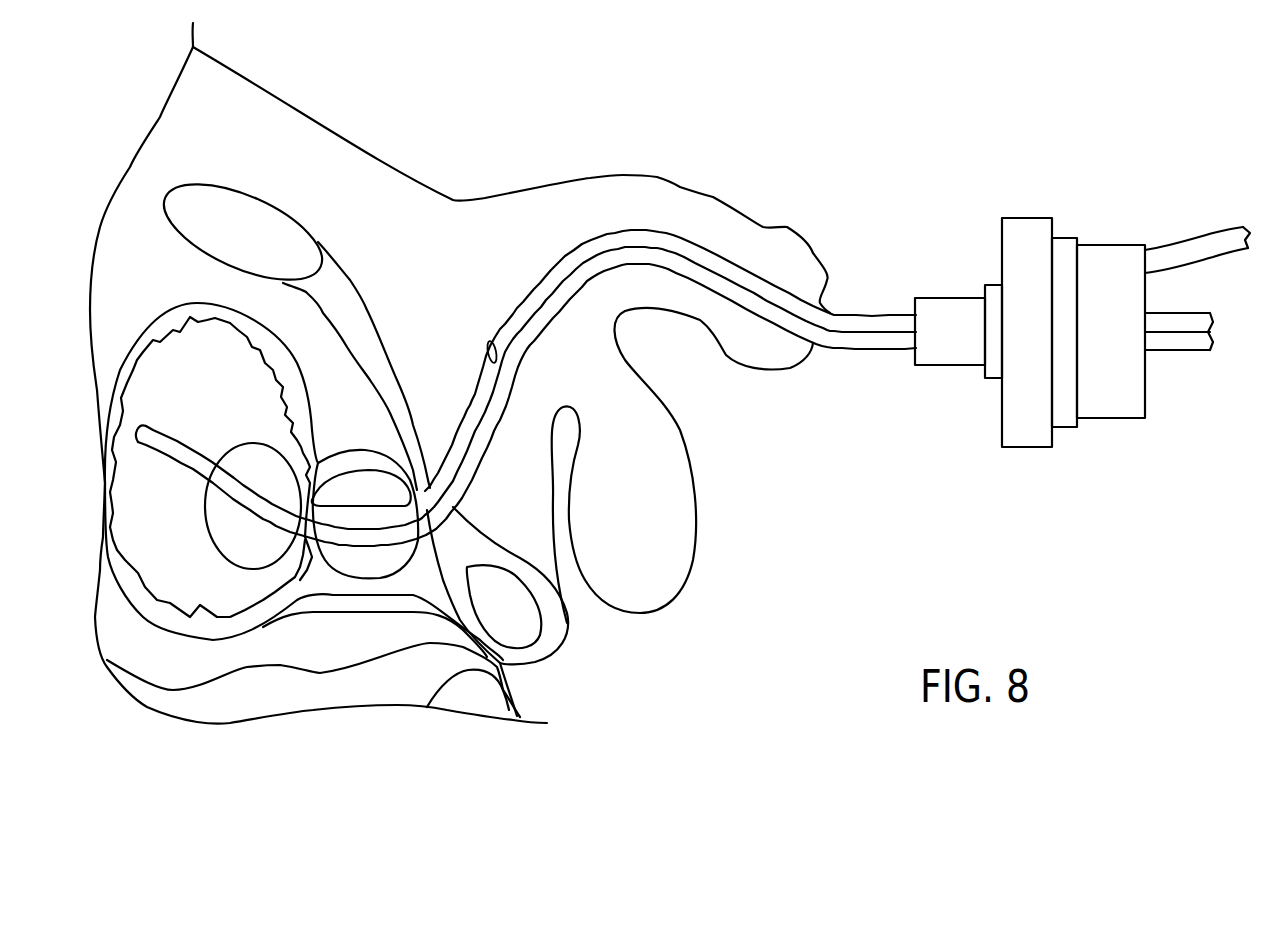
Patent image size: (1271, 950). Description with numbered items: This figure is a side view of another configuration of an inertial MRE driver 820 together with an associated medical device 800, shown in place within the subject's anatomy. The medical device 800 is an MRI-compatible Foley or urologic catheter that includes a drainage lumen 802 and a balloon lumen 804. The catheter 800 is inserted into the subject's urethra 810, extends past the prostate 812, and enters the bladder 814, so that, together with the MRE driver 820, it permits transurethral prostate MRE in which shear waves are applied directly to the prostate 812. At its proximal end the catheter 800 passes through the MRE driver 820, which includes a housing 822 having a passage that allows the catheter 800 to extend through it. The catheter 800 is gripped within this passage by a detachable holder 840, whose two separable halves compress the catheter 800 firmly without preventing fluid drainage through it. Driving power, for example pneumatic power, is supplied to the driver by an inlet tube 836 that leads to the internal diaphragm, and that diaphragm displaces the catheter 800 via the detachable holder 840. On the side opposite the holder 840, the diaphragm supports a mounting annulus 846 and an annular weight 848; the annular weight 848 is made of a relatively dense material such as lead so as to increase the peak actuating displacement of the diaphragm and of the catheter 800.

The medical device 800 is at (526, 382).
The drainage lumen 802 is at (540, 328).
The balloon lumen 804 is at (531, 277).
The urethra 810 is at (496, 341).
The prostate 812 is at (347, 580).
The bladder 814 is at (177, 600).
The inertial MRE driver 820 is at (1082, 290).
The housing 822 is at (1022, 218).
The inlet tube 836 is at (1192, 243).
The detachable holder 840 is at (943, 298).
The mounting annulus 846 is at (1060, 427).
The annular weight 848 is at (1110, 420).